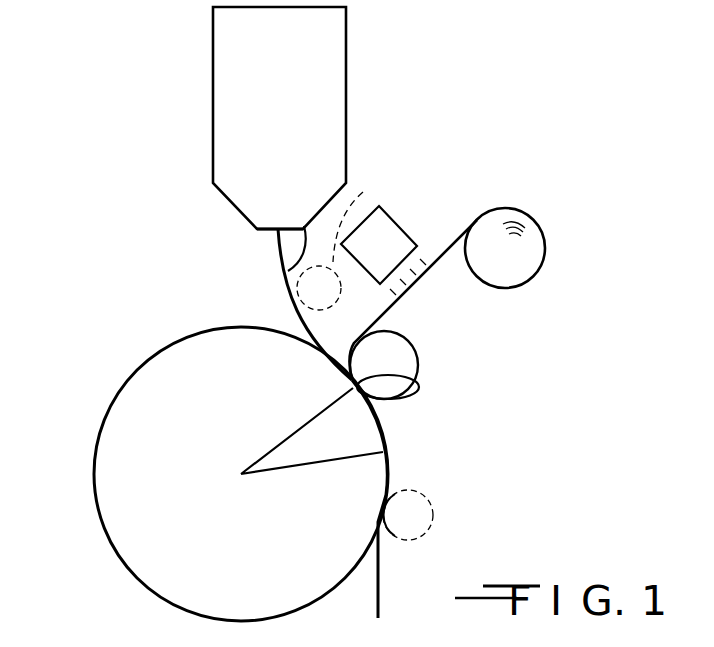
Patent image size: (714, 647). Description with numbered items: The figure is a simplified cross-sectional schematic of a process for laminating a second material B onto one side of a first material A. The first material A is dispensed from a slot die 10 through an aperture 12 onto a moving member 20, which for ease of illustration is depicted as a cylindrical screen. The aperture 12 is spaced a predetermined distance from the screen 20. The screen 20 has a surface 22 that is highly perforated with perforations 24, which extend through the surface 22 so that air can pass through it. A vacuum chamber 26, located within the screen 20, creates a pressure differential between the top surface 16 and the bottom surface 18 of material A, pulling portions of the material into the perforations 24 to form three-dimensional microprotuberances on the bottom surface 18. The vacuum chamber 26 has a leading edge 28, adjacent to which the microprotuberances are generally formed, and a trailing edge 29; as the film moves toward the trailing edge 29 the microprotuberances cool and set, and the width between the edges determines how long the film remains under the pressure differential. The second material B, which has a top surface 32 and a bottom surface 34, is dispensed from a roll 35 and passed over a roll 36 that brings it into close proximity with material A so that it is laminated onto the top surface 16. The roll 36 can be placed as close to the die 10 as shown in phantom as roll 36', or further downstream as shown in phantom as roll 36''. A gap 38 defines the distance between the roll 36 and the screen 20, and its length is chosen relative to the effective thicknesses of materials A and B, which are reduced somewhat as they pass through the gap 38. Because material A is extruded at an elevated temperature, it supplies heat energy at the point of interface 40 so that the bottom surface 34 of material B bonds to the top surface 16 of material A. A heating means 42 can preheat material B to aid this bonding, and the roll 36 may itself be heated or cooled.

The slot die 10 is at (213, 107).
The aperture 12 is at (260, 237).
The top surface 16 is at (304, 228).
The bottom surface 18 is at (282, 264).
The moving member 20 is at (196, 458).
The surface 22 is at (162, 348).
The perforations 24 is at (369, 499).
The vacuum chamber 26 is at (360, 432).
The leading edge 28 is at (310, 415).
The trailing edge 29 is at (322, 458).
The top surface 32 is at (428, 270).
The bottom surface 34 is at (391, 304).
The roll 35 is at (537, 224).
The roll 36 is at (424, 365).
The roll 36' is at (367, 210).
The roll 36'' is at (455, 507).
The gap 38 is at (373, 403).
The point of interface 40 is at (413, 385).
The heating means 42 is at (390, 212).
The first material A is at (272, 252).
The second material B is at (434, 258).